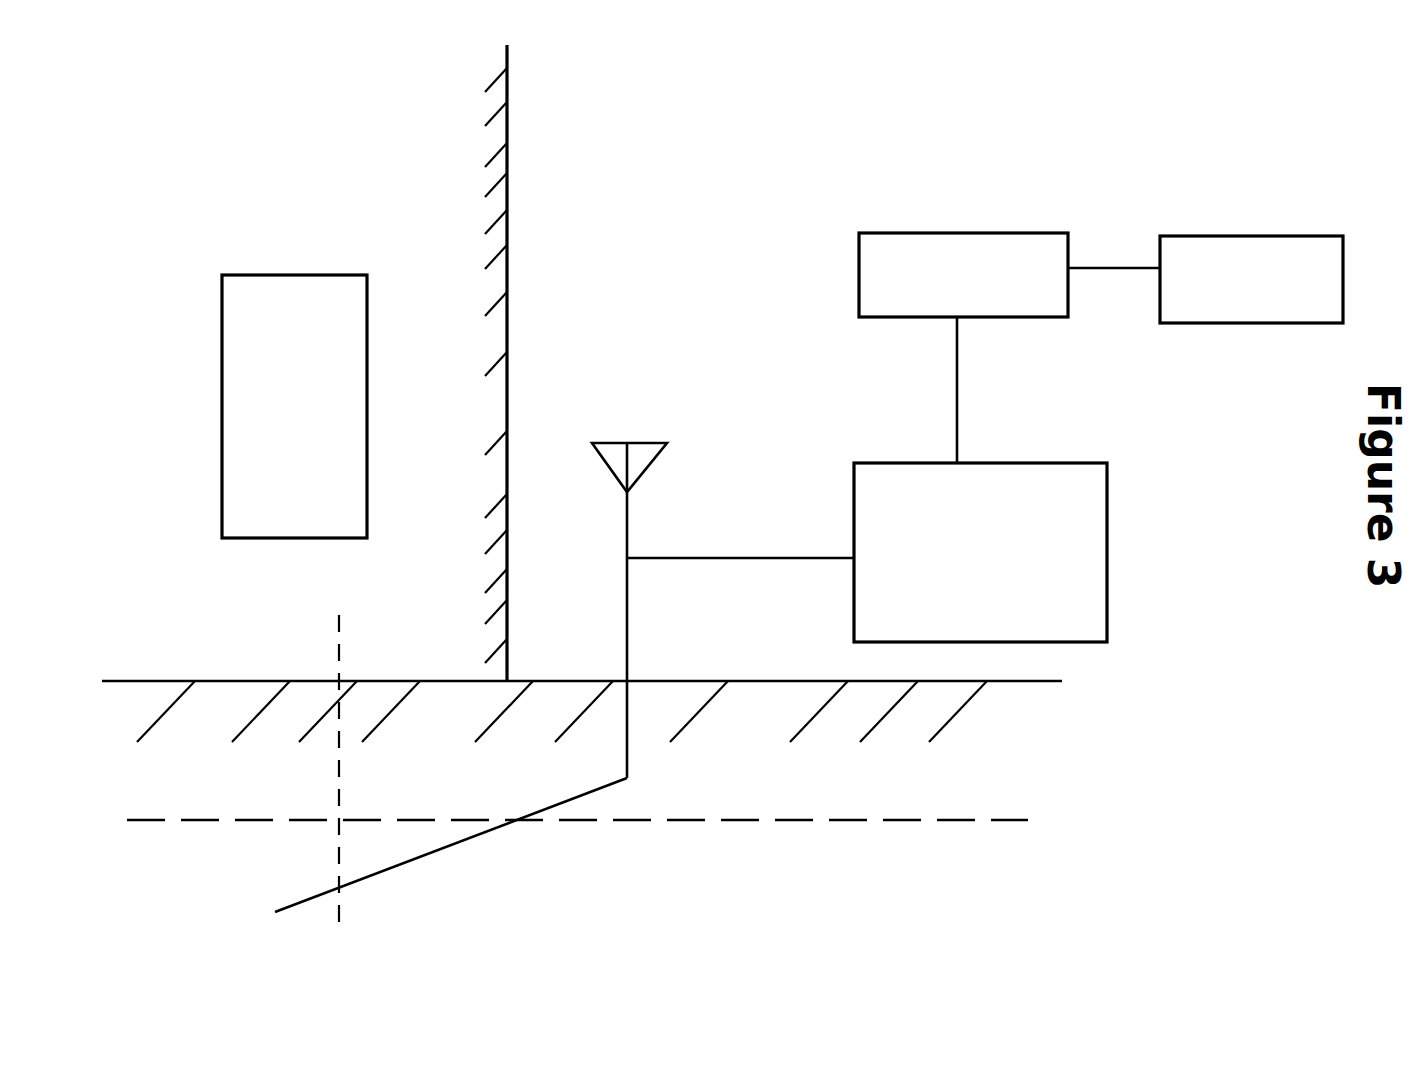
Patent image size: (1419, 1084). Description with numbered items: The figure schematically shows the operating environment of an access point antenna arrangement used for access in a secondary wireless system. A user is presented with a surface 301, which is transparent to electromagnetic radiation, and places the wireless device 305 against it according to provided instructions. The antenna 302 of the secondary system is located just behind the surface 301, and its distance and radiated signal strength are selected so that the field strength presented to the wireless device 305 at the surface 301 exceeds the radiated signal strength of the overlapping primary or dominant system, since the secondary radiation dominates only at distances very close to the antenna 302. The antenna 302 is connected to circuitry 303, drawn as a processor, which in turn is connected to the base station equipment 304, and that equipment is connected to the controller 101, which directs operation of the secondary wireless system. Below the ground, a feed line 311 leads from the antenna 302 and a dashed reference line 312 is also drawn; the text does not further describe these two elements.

The controller 101 is at (1270, 236).
The surface 301 is at (507, 205).
The antenna 302 is at (627, 520).
The circuitry 303 is at (1055, 463).
The base station equipment 304 is at (993, 233).
The wireless device 305 is at (255, 275).
The antenna feed cable 311 is at (608, 789).
The reference level line 312 is at (667, 822).